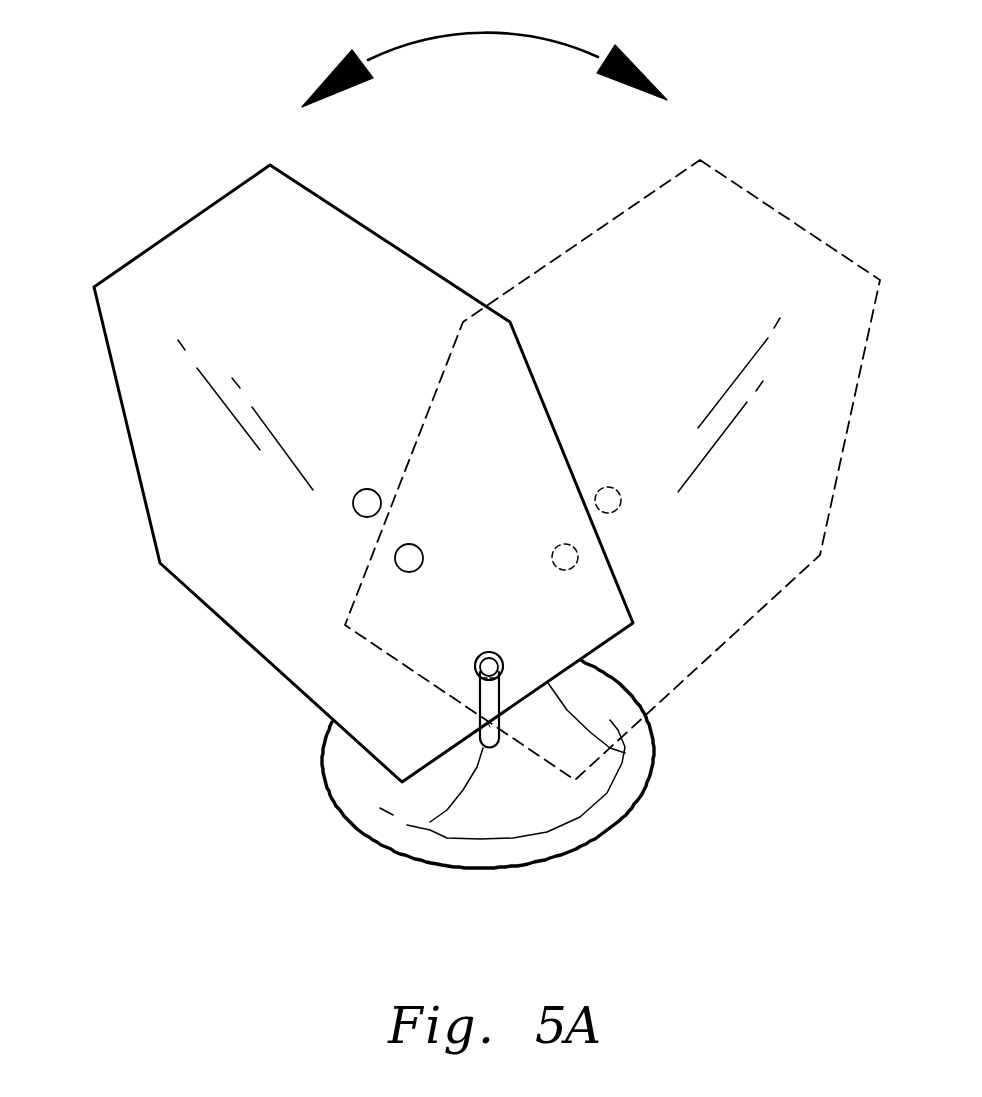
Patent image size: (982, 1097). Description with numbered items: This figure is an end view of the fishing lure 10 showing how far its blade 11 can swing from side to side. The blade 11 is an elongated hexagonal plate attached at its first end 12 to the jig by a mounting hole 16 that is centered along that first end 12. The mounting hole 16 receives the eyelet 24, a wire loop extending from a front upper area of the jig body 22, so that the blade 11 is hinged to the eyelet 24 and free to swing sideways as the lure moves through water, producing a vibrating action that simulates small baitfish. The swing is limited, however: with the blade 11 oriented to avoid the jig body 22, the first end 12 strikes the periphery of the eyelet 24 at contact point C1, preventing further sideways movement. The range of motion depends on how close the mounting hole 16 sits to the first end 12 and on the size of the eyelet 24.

The fishing lure 10 is at (100, 480).
The blade 11 is at (195, 214).
The first end 12 is at (625, 753).
The mounting hole 16 is at (497, 653).
The jig body 22 is at (588, 846).
The eyelet 24 is at (430, 822).
The contact point C1 is at (477, 723).